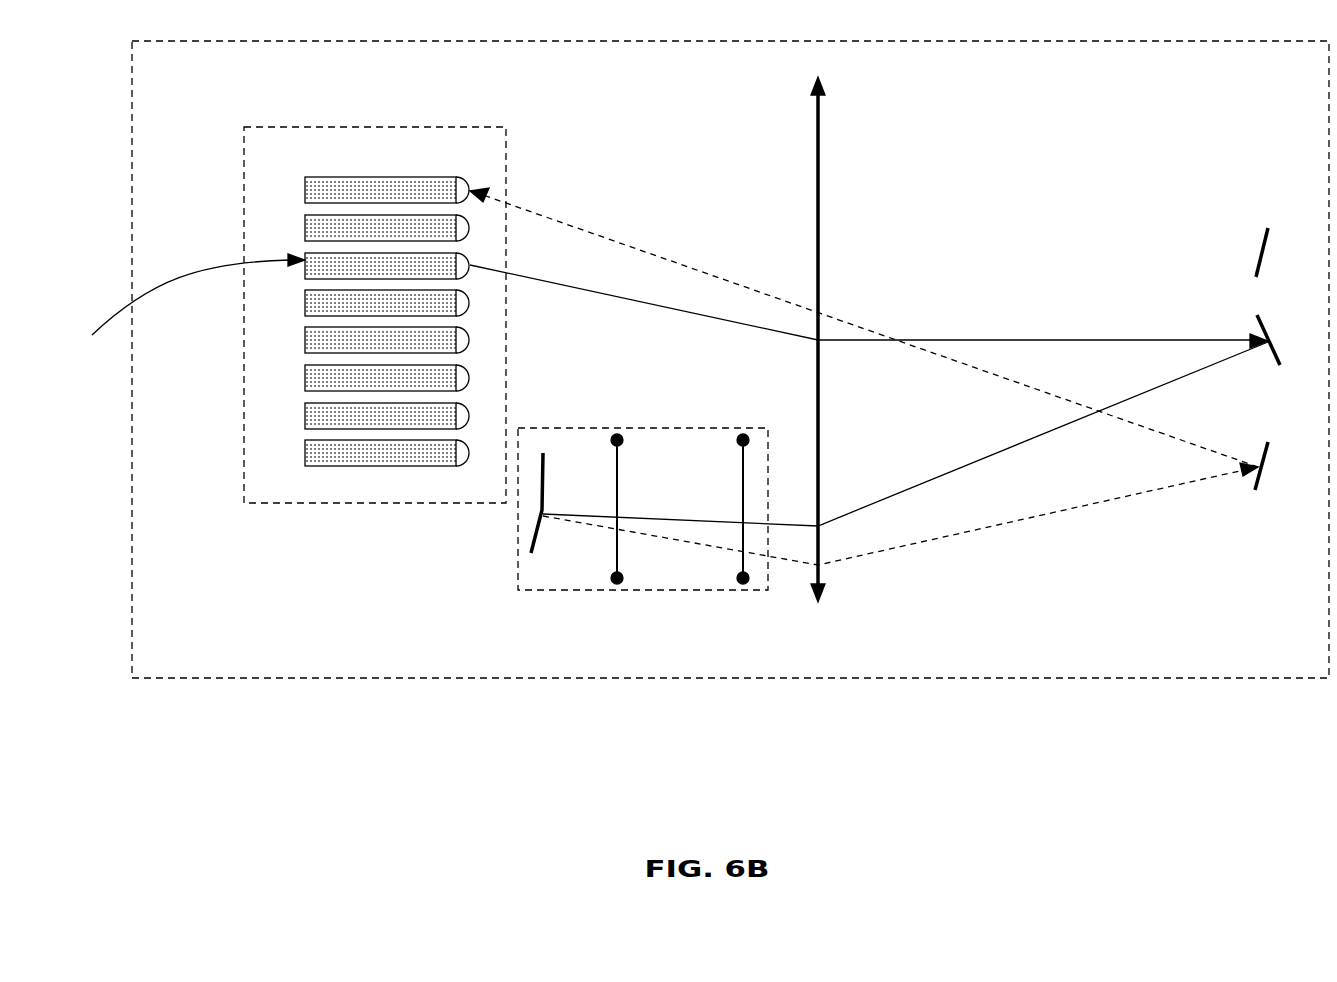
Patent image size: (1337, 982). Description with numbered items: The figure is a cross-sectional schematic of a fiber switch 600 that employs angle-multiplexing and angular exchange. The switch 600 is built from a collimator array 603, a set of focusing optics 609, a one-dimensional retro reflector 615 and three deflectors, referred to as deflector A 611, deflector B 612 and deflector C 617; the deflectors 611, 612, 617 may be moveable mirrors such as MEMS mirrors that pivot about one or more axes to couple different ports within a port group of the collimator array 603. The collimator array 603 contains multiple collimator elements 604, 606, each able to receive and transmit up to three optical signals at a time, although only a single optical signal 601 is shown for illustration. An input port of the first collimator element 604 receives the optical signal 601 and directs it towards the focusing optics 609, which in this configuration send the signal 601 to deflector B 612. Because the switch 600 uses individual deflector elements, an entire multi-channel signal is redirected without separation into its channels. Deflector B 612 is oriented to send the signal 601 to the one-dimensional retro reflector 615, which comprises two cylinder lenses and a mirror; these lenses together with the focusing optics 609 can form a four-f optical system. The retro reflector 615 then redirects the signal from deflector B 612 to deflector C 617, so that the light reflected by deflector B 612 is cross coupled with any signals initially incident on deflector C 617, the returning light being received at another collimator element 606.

The fiber switch 600 is at (730, 387).
The optical signal 601 is at (198, 294).
The collimator array 603 is at (375, 342).
The first collimator element 604 is at (302, 256).
The collimator element 606 is at (305, 178).
The focusing optics 609 is at (827, 366).
The deflector A 611 is at (1275, 228).
The deflector B 612 is at (1285, 367).
The 1-D retro reflector 615 is at (643, 485).
The deflector C 617 is at (1263, 492).